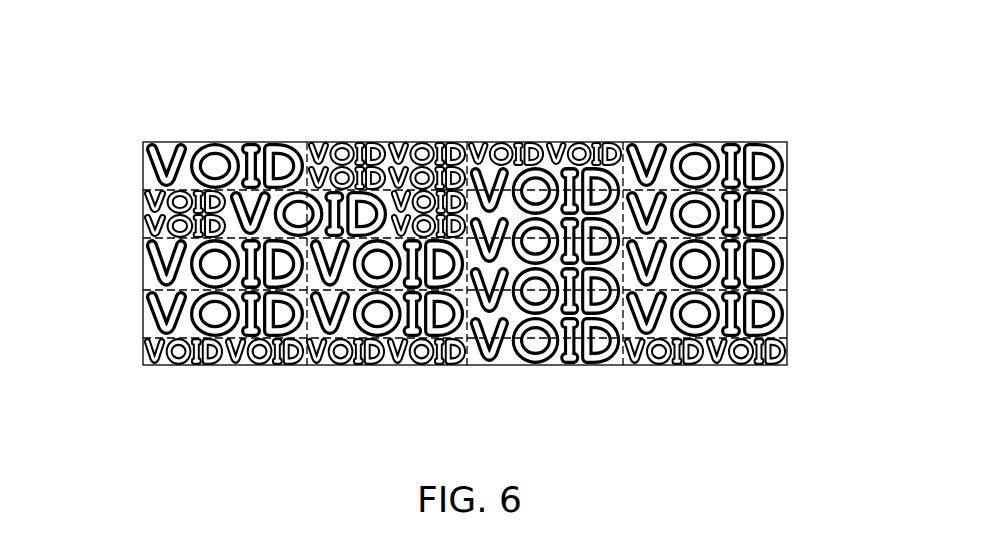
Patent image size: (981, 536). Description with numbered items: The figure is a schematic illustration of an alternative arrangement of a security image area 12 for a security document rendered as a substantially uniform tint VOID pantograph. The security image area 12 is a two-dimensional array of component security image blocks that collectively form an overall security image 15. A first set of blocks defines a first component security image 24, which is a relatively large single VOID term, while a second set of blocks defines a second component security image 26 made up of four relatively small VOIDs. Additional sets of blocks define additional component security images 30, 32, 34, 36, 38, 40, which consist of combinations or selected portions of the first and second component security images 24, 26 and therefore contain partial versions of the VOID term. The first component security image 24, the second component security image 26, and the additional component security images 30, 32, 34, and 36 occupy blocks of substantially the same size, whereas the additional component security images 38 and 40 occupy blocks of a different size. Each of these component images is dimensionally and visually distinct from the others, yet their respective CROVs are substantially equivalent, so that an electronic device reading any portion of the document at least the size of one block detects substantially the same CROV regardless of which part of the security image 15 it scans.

The security image area 12 is at (787, 366).
The security image 15 is at (446, 254).
The first component security image 24 is at (232, 128).
The second component security image 26 is at (382, 110).
The additional component security image 30 is at (507, 128).
The additional component security image 32 is at (137, 232).
The additional component security image 34 is at (367, 128).
The additional component security image 36 is at (555, 377).
The additional component security image 38 is at (137, 352).
The additional component security image 40 is at (547, 323).